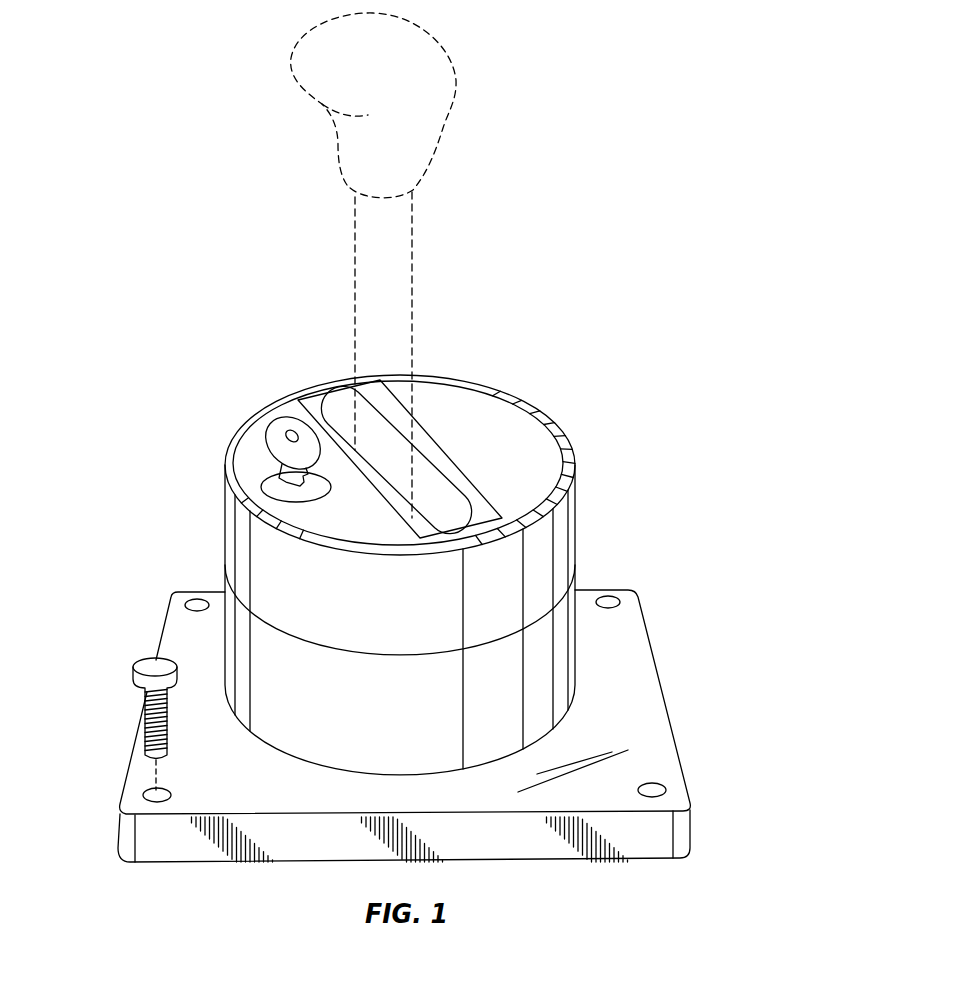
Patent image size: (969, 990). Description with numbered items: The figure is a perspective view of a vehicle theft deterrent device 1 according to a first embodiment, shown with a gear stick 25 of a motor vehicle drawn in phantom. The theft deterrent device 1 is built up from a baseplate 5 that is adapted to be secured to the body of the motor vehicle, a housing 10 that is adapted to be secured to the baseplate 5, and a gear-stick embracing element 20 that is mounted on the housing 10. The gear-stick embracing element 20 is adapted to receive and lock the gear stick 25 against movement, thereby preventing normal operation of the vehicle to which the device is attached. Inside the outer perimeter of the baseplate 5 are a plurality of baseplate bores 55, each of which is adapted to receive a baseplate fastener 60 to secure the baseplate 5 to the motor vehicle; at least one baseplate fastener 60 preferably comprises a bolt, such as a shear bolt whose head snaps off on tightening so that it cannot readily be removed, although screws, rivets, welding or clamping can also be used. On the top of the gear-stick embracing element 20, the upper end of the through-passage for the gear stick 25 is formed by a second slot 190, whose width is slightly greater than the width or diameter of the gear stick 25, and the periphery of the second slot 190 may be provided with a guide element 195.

The vehicle theft deterrent device 1 is at (112, 346).
The baseplate 5 is at (157, 624).
The housing 10 is at (585, 655).
The gear-stick embracing element 20 is at (581, 507).
The gear stick 25 is at (352, 240).
The baseplate bores 55 is at (190, 600).
The baseplate fastener 60 is at (133, 673).
The second slot 190 is at (347, 418).
The guide element 195 is at (315, 403).